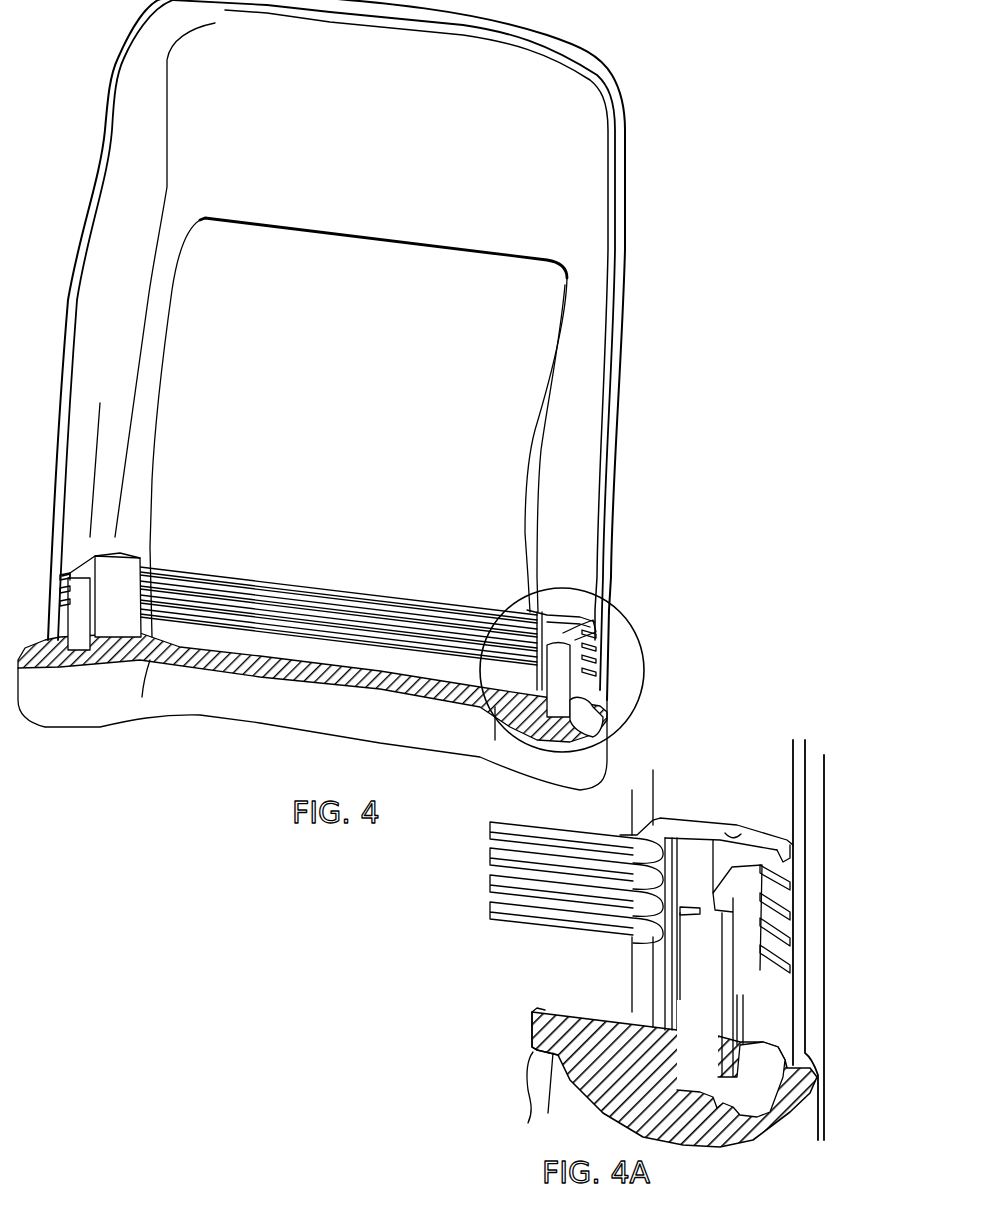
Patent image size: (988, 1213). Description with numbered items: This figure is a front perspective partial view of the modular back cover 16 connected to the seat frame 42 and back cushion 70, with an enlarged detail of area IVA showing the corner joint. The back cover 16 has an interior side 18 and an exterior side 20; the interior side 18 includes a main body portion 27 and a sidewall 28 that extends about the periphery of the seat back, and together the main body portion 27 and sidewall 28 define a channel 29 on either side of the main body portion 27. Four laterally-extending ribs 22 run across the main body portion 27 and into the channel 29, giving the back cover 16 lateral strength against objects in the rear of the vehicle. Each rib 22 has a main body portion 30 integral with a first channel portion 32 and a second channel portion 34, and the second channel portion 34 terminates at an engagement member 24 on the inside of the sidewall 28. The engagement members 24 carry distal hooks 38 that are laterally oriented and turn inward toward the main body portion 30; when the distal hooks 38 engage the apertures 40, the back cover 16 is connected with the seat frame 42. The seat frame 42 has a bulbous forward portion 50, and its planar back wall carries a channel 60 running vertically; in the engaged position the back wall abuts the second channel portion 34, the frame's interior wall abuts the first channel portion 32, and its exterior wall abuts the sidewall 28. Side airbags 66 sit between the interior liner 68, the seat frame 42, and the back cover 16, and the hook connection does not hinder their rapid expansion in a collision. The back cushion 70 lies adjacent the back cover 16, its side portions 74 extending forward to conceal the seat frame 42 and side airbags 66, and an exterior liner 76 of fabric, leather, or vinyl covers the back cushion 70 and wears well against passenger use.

In FIG. 4, the modular back cover 16 is at (614, 64).
In FIG. 4, the interior side 18 is at (360, 138).
In FIG. 4, the exterior side 20 is at (627, 120).
In FIG. 4, the laterally-extending ribs 22 is at (364, 590).
In FIG. 4A, the laterally-extending ribs 22 is at (552, 823).
In FIG. 4, the engagement members 24 is at (67, 574).
In FIG. 4A, the engagement members 24 is at (785, 897).
In FIG. 4, the main body portion 27 is at (295, 446).
In FIG. 4A, the main body portion 27 is at (585, 826).
In FIG. 4, the sidewall 28 is at (608, 412).
In FIG. 4A, the sidewall 28 is at (820, 793).
In FIG. 4, the channel 29 is at (97, 354).
In FIG. 4A, the channel 29 is at (707, 762).
In FIG. 4, the main body portion of rib 30 is at (237, 612).
In FIG. 4A, the main body portion of rib 30 is at (583, 903).
In FIG. 4, the first channel portion 32 is at (152, 570).
In FIG. 4A, the first channel portion 32 is at (637, 922).
In FIG. 4A, the second channel portion 34 is at (713, 830).
In FIG. 4A, the distal hooks 38 is at (787, 843).
In FIG. 4A, the apertures 40 is at (758, 863).
In FIG. 4A, the seat frame 42 is at (683, 1002).
In FIG. 4A, the bulbous forward portion 50 is at (733, 1005).
In FIG. 4A, the channel 60 is at (733, 835).
In FIG. 4, the side airbags 66 is at (610, 697).
In FIG. 4A, the side airbags 66 is at (762, 1058).
In FIG. 4A, the interior liner 68 is at (570, 995).
In FIG. 4, the back cushion 70 is at (485, 737).
In FIG. 4A, the back cushion 70 is at (532, 1030).
In FIG. 4A, the side portions 74 is at (707, 1143).
In FIG. 4, the exterior liner 76 is at (510, 750).
In FIG. 4A, the exterior liner 76 is at (540, 1096).
In FIG. 4, the area IVA is at (617, 607).